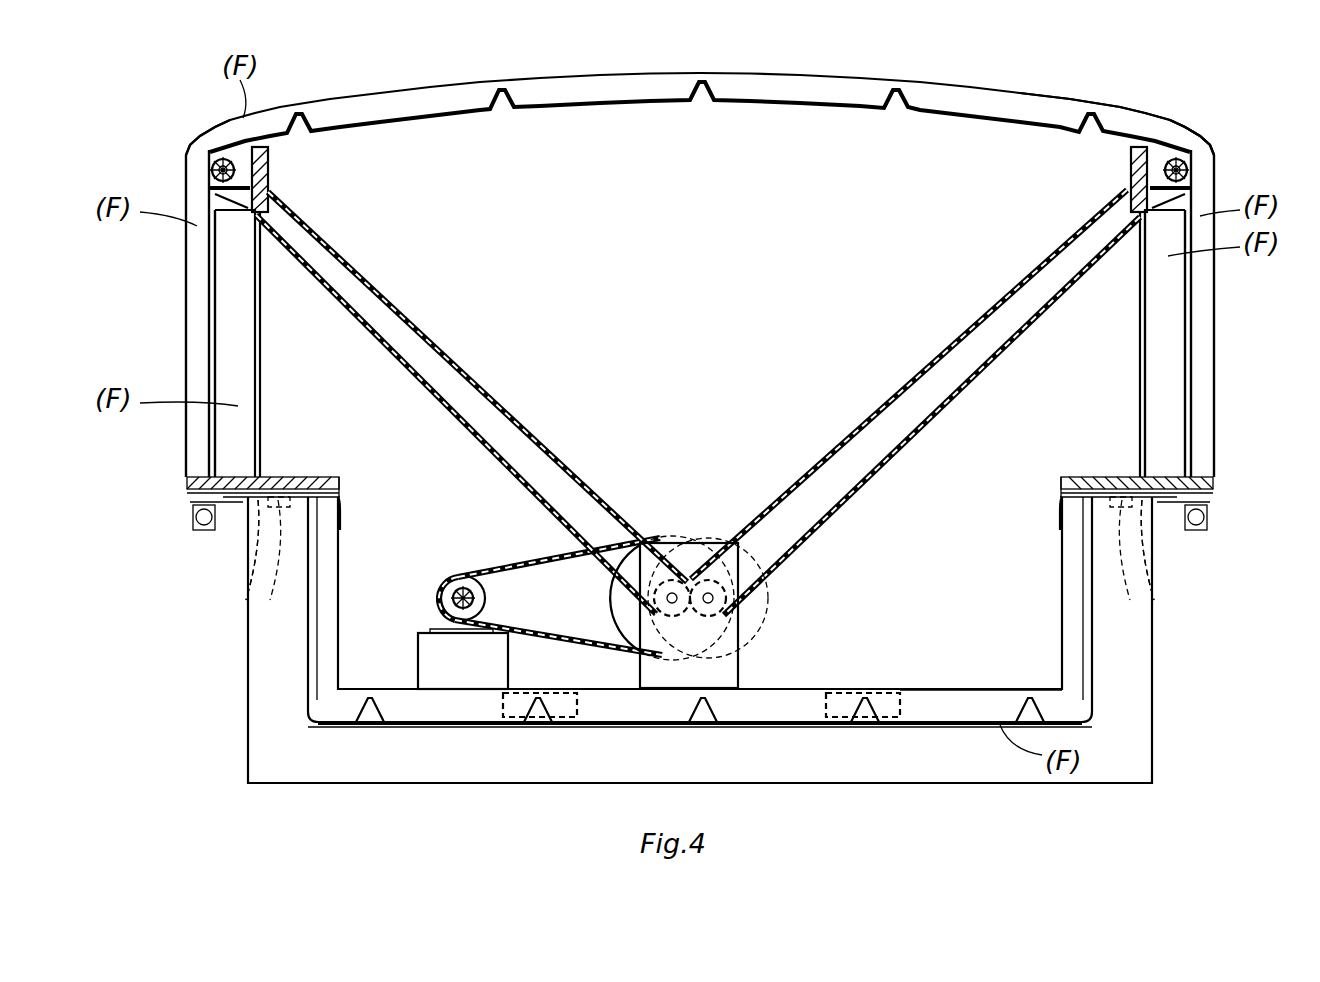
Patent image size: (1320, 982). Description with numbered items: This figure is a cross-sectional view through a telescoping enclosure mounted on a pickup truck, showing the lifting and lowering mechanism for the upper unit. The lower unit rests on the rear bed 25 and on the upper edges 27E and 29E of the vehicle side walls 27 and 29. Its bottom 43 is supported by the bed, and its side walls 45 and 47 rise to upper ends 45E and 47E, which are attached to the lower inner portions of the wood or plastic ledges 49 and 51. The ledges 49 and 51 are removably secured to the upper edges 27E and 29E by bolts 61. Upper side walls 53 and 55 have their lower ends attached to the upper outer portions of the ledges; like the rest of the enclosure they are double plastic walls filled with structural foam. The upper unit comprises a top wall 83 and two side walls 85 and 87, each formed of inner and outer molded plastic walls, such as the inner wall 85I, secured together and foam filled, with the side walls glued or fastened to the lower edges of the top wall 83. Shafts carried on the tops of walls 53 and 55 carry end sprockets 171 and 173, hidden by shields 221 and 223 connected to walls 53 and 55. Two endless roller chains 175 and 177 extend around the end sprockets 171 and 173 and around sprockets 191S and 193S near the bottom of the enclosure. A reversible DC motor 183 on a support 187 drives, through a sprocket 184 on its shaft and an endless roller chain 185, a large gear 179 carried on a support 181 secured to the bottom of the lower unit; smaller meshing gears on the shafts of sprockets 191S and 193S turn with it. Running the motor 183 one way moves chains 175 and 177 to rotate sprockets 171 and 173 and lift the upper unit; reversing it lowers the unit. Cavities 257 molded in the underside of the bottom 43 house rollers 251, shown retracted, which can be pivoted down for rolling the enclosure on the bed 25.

The top wall 83 is at (1085, 93).
The end sprocket 171 is at (187, 146).
The end sprocket 173 is at (1158, 149).
The side wall 85 is at (186, 292).
The inner molded plastic wall 85I is at (346, 398).
The upper side wall 53 is at (236, 366).
The shield 221 is at (268, 163).
The side wall 87 is at (1214, 292).
The upper side wall 55 is at (1168, 368).
The shield 223 is at (1131, 165).
The ledge 49 is at (268, 478).
The ledge 51 is at (1140, 480).
The side wall 27 is at (248, 650).
The side wall 29 is at (1152, 650).
The upper edge 27E is at (246, 561).
The upper edge 29E is at (1152, 561).
The bolt 61 is at (253, 592).
The side wall 45 is at (328, 667).
The upper end 45E is at (340, 500).
The side wall 47 is at (1072, 655).
The upper end 47E is at (1062, 520).
The rear bed 25 is at (800, 727).
The bottom 43 is at (945, 727).
The roller 251 is at (540, 727).
The cavity 257 is at (482, 732).
The support 187 is at (485, 655).
The reversible DC motor 183 is at (452, 582).
The sprocket 184 is at (447, 601).
The endless roller chain 185 is at (538, 565).
The large gear 179 is at (612, 600).
The endless roller chain 175 is at (455, 358).
The endless roller chain 177 is at (948, 352).
The sprocket 191S is at (640, 572).
The sprocket 193S is at (742, 600).
The support 181 is at (740, 655).